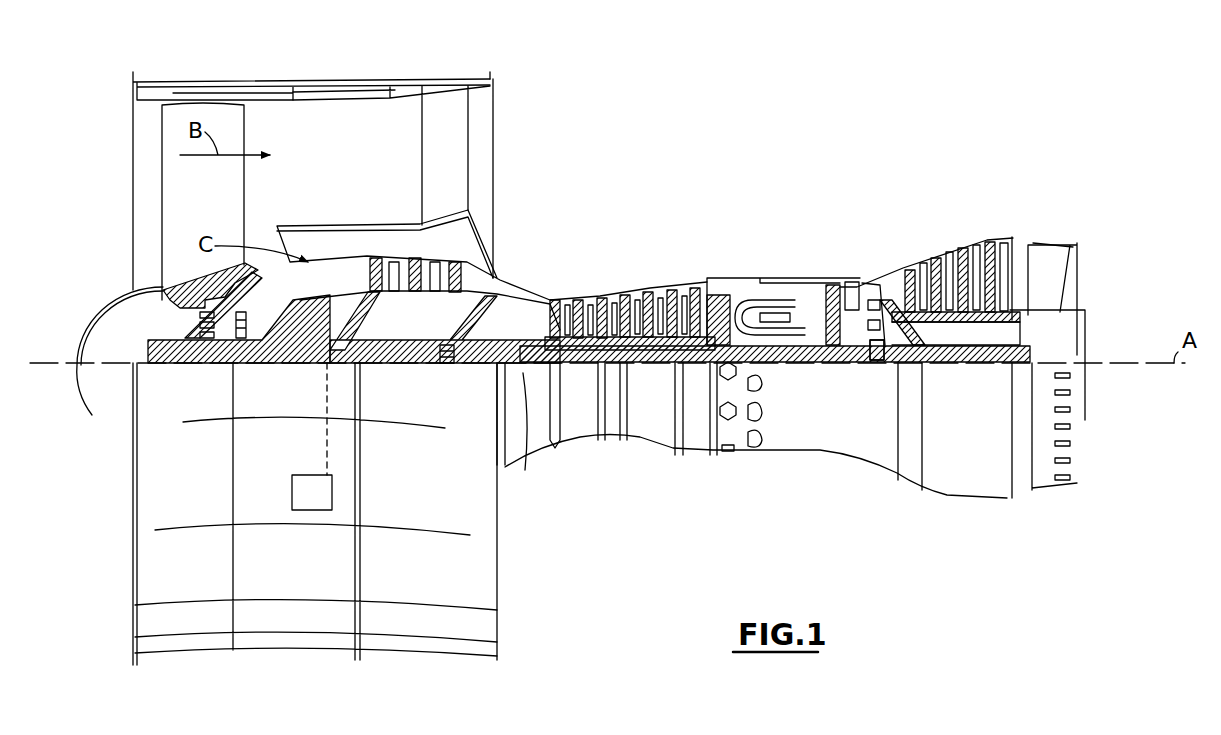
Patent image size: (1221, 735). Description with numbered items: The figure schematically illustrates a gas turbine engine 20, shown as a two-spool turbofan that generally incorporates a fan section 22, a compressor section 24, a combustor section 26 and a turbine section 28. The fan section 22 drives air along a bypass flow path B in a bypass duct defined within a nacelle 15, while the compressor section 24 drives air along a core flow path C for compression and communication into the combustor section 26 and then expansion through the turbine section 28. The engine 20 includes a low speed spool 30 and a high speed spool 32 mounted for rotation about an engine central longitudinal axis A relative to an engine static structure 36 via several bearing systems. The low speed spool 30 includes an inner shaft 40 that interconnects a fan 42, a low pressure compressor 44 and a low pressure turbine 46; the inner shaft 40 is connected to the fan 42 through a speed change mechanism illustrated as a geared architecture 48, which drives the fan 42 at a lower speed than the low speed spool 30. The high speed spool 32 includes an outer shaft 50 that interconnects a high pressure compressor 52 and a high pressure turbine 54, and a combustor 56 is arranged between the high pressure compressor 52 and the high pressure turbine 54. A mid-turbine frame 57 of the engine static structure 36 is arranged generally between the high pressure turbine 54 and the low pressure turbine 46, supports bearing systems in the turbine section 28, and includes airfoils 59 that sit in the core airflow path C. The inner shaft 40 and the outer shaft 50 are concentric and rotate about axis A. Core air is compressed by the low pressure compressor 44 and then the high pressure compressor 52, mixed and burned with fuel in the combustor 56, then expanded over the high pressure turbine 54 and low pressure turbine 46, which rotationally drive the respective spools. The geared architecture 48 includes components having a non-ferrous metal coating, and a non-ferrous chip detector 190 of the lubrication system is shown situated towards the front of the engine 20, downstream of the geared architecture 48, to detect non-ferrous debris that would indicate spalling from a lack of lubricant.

The nacelle 15 is at (316, 88).
The gas turbine engine 20 is at (778, 128).
The fan section 22 is at (242, 72).
The compressor section 24 is at (548, 272).
The combustor section 26 is at (770, 262).
The turbine section 28 is at (920, 222).
The low speed spool 30 is at (653, 372).
The high speed spool 32 is at (698, 330).
The engine static structure 36 is at (695, 455).
The inner shaft 40 is at (522, 380).
The fan 42 is at (215, 207).
The low pressure compressor 44 is at (418, 270).
The low pressure turbine 46 is at (960, 248).
The geared architecture 48 is at (322, 350).
The outer shaft 50 is at (772, 352).
The high pressure compressor 52 is at (625, 322).
The high pressure turbine 54 is at (838, 285).
The combustor 56 is at (775, 300).
The mid-turbine frame 57 is at (878, 272).
The airfoils 59 is at (895, 305).
The non-ferrous chip detector 190 is at (305, 475).